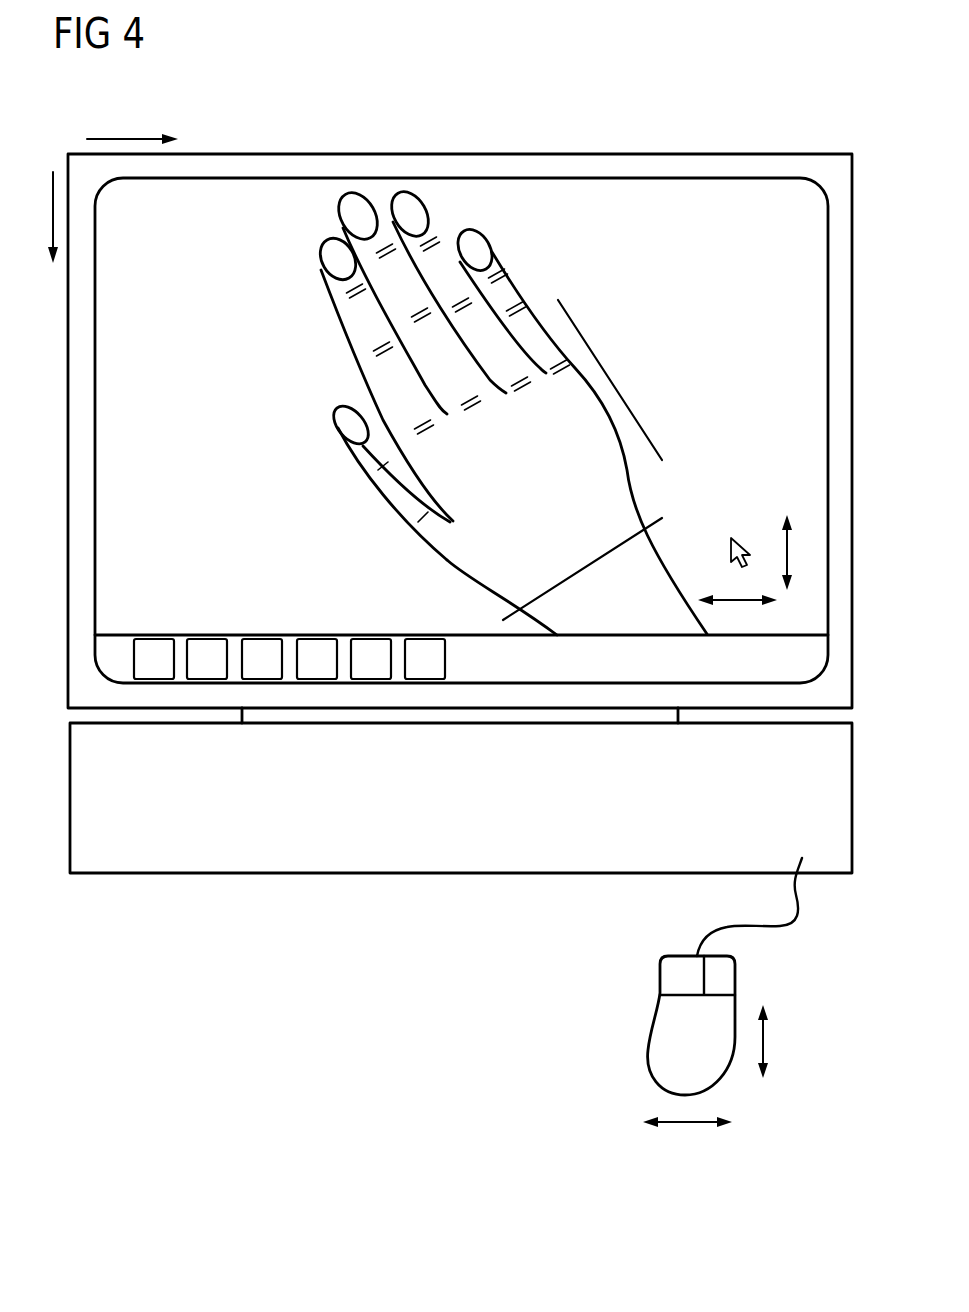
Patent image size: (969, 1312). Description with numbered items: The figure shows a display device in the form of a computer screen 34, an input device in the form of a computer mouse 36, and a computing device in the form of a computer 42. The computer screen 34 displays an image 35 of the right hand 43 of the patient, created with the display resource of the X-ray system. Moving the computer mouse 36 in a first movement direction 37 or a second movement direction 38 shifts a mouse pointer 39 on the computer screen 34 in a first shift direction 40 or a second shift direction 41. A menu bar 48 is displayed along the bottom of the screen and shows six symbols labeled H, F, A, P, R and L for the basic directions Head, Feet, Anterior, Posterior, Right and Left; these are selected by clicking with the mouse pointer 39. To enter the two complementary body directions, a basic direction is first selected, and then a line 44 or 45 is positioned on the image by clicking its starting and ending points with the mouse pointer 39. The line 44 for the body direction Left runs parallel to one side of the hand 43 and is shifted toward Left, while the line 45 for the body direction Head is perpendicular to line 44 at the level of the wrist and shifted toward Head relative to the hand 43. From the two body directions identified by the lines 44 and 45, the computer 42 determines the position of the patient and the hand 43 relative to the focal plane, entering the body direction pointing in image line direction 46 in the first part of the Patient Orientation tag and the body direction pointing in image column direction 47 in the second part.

The computer screen 34 is at (684, 124).
The image 35 is at (568, 193).
The computer mouse 36 is at (663, 1023).
The first movement direction 37 is at (687, 1124).
The second movement direction 38 is at (767, 1040).
The mouse pointer 39 is at (740, 536).
The first shift direction 40 is at (723, 598).
The second shift direction 41 is at (788, 547).
The computer 42 is at (416, 874).
The right hand 43 is at (453, 557).
The line 44 is at (573, 318).
The line 45 is at (540, 594).
The image line direction 46 is at (123, 137).
The image column direction 47 is at (55, 216).
The menu bar 48 is at (180, 640).